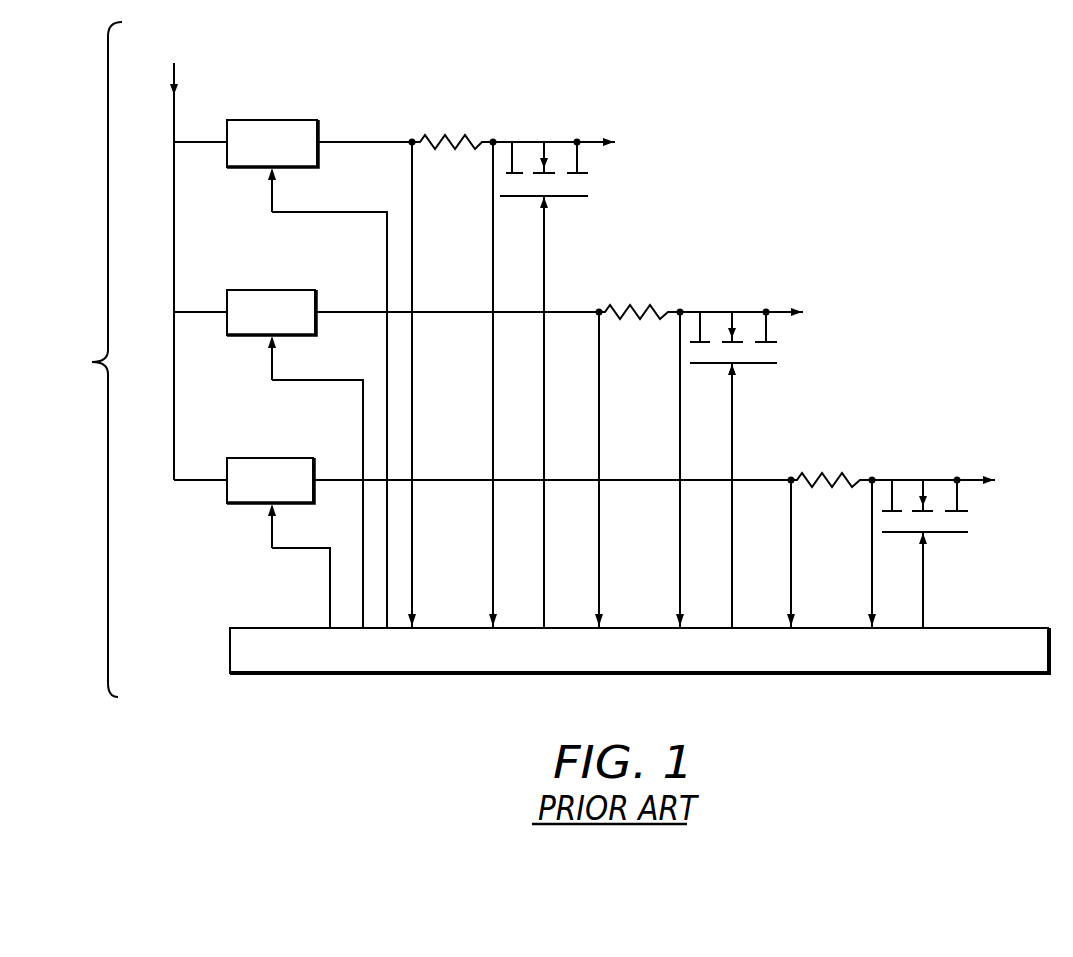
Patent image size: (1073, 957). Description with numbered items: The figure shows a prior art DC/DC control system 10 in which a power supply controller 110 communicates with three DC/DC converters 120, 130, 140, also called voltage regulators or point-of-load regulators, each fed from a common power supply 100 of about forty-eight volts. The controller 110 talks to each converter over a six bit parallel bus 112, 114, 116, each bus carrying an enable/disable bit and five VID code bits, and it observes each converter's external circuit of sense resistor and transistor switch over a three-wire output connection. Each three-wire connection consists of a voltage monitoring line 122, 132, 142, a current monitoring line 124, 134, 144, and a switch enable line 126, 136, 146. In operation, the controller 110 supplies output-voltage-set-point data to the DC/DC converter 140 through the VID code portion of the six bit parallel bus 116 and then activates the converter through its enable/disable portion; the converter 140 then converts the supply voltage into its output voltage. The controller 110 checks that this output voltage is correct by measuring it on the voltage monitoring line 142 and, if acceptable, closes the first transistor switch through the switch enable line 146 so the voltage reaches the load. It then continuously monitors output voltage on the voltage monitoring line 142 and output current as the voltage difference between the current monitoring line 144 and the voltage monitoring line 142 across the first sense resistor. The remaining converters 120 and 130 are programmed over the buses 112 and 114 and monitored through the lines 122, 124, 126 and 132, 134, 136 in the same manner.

The DC/DC control system 10 is at (553, 359).
The power supply 100 is at (174, 257).
The power supply controller 110 is at (230, 645).
The six bit parallel bus 112 is at (330, 583).
The six bit parallel bus 114 is at (363, 497).
The six bit parallel bus 116 is at (387, 575).
The DC/DC converter 120 is at (313, 468).
The voltage monitoring line 122 is at (791, 512).
The current monitoring line 124 is at (872, 562).
The switch enable line 126 is at (923, 562).
The DC/DC converter 130 is at (315, 322).
The voltage monitoring line 132 is at (599, 375).
The current monitoring line 134 is at (680, 420).
The switch enable line 136 is at (732, 405).
The DC/DC converter 140 is at (317, 155).
The voltage monitoring line 142 is at (412, 195).
The current monitoring line 144 is at (493, 233).
The switch enable line 146 is at (544, 222).